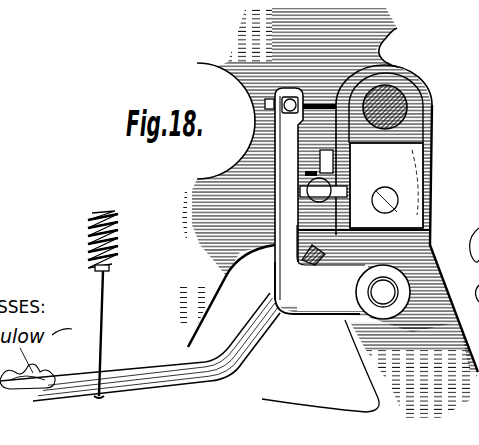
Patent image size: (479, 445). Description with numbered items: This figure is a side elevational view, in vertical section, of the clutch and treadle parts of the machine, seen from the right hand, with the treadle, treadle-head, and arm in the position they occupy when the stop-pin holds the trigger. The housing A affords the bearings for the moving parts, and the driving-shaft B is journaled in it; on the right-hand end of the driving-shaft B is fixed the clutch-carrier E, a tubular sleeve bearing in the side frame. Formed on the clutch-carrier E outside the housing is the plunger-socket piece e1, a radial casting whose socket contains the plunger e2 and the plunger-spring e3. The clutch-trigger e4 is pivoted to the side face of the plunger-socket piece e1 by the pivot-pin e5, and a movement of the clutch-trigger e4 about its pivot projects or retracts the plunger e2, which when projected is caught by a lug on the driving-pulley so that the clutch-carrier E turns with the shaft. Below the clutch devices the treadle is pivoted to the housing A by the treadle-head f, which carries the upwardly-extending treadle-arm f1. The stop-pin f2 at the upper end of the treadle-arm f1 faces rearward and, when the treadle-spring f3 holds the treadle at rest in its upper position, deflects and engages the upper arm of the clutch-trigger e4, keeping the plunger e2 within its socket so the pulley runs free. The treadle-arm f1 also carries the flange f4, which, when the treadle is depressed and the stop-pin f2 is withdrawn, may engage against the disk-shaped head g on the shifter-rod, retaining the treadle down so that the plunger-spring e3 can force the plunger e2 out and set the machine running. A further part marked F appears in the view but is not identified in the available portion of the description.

The housing A is at (297, 42).
The driving-shaft B is at (405, 92).
The clutch-carrier E is at (430, 115).
The plunger-socket piece e1 is at (380, 176).
The plunger e2 is at (332, 195).
The plunger-spring e3 is at (305, 173).
The clutch-trigger e4 is at (348, 78).
The pivot-pin e5 is at (316, 244).
The treadle-head f is at (322, 288).
The treadle-arm f1 is at (280, 176).
The stop-pin f2 is at (321, 104).
The treadle-spring f3 is at (118, 240).
The flange f4 is at (301, 178).
The disk-shaped head g is at (310, 163).
The rod F is at (82, 384).